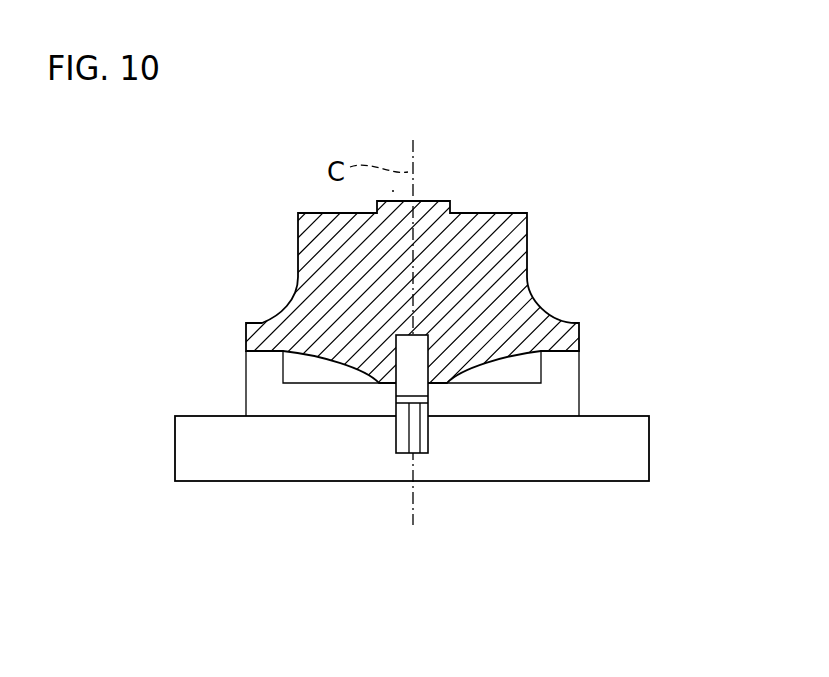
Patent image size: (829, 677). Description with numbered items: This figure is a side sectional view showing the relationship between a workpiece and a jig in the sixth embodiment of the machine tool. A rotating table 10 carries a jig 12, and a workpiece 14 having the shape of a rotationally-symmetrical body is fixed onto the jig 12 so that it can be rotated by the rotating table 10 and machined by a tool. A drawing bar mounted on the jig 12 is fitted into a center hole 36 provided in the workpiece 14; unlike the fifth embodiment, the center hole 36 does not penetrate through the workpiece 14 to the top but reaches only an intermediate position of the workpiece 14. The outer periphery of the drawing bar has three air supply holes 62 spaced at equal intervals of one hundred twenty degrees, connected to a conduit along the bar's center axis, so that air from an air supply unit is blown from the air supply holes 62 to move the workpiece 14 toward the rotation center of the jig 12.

The rotating table 10 is at (633, 459).
The jig 12 is at (558, 387).
The workpiece 14 is at (318, 259).
The center hole 36 is at (400, 340).
The air supply holes 62 is at (395, 447).